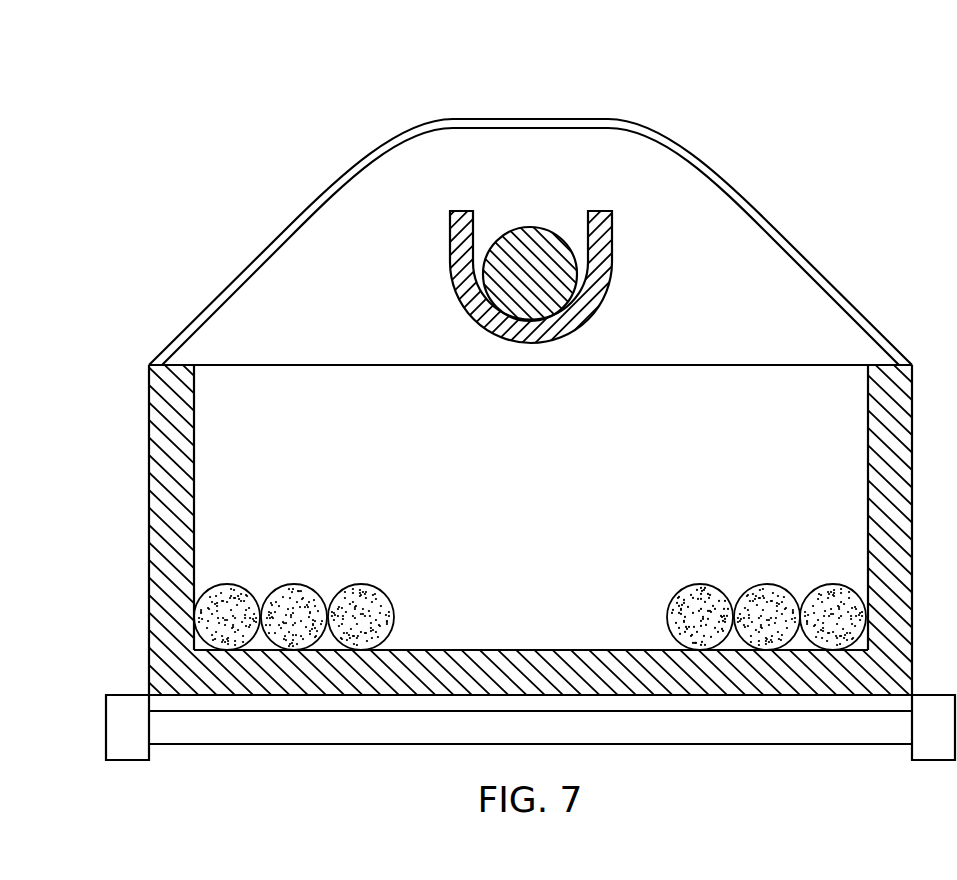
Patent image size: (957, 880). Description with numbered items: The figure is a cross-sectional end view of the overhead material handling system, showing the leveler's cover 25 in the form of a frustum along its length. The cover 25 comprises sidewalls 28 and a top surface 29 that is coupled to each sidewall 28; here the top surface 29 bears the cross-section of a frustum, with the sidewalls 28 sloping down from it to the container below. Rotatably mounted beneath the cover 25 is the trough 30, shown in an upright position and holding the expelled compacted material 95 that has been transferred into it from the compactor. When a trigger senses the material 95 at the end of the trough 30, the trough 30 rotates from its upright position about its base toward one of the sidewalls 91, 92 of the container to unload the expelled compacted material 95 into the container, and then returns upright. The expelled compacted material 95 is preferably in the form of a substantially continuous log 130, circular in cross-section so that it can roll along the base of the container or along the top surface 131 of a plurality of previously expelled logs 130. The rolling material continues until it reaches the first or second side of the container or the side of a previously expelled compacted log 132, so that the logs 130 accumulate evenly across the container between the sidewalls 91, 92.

The cover 25 is at (530, 211).
The sidewall 28 is at (241, 276).
The top surface 29 is at (527, 118).
The trough 30 is at (612, 236).
The expelled compacted material 95 is at (517, 231).
The sidewall of the container 91 is at (149, 485).
The sidewall of the container 92 is at (912, 491).
The log 130 is at (767, 617).
The top surface of previously expelled logs 131 is at (833, 583).
The side of a previously expelled compacted log 132 is at (530, 585).